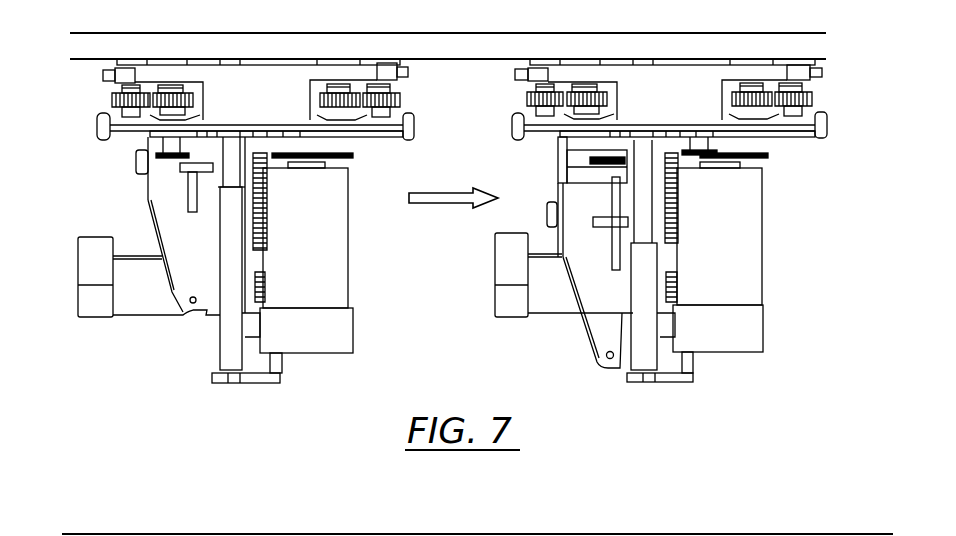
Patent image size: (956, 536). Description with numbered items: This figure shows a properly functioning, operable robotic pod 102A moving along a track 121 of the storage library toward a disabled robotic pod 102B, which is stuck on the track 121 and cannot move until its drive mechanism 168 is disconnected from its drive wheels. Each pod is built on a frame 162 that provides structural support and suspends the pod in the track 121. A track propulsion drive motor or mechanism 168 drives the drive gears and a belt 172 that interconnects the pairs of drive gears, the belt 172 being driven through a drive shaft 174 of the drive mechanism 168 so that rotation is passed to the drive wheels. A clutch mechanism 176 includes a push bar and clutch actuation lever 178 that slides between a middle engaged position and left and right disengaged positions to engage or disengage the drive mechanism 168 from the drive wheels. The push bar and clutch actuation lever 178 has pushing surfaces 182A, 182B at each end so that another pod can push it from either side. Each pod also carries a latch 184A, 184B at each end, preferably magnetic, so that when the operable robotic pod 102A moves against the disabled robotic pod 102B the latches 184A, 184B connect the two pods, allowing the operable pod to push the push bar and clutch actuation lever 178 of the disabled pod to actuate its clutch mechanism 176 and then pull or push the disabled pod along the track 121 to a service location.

The track 121 is at (458, 52).
The frame 162 is at (263, 111).
The track propulsion drive motor or mechanism 168 is at (340, 290).
The belt 172 is at (280, 150).
The drive shaft 174 is at (725, 160).
The clutch mechanism 176 is at (311, 108).
The push bar and clutch actuation lever 178 is at (125, 131).
The pushing surface 182A is at (417, 123).
The pushing surface 182B is at (108, 128).
The latch 184A is at (417, 73).
The latch 184B is at (103, 73).
The operable robotic pod 102A is at (223, 412).
The disabled robotic pod 102B is at (657, 407).